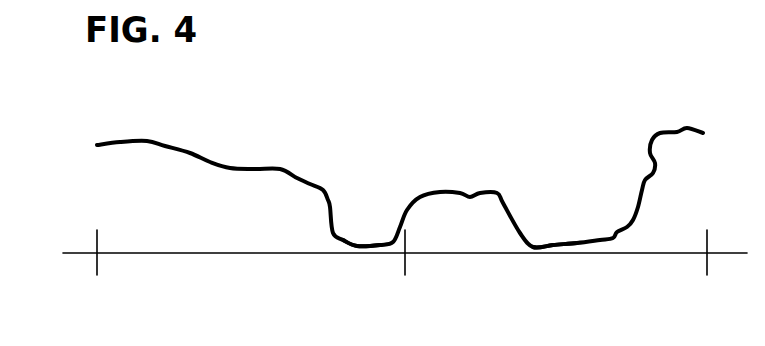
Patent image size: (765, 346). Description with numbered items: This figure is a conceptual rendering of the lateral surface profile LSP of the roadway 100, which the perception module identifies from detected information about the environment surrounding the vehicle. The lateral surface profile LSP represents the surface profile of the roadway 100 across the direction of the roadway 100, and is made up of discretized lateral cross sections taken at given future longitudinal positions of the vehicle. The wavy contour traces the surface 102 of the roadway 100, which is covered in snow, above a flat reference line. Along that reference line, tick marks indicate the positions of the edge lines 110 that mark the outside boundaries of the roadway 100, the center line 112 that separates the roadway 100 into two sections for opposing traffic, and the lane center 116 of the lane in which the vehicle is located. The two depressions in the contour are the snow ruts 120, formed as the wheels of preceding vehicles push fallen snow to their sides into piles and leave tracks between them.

The roadway 100 is at (292, 140).
The surface 102 is at (247, 255).
The edge lines 110 is at (707, 265).
The center line 112 is at (95, 267).
The lane center 116 is at (403, 265).
The snow ruts 120 is at (358, 244).
The lateral surface profile LSP is at (145, 143).